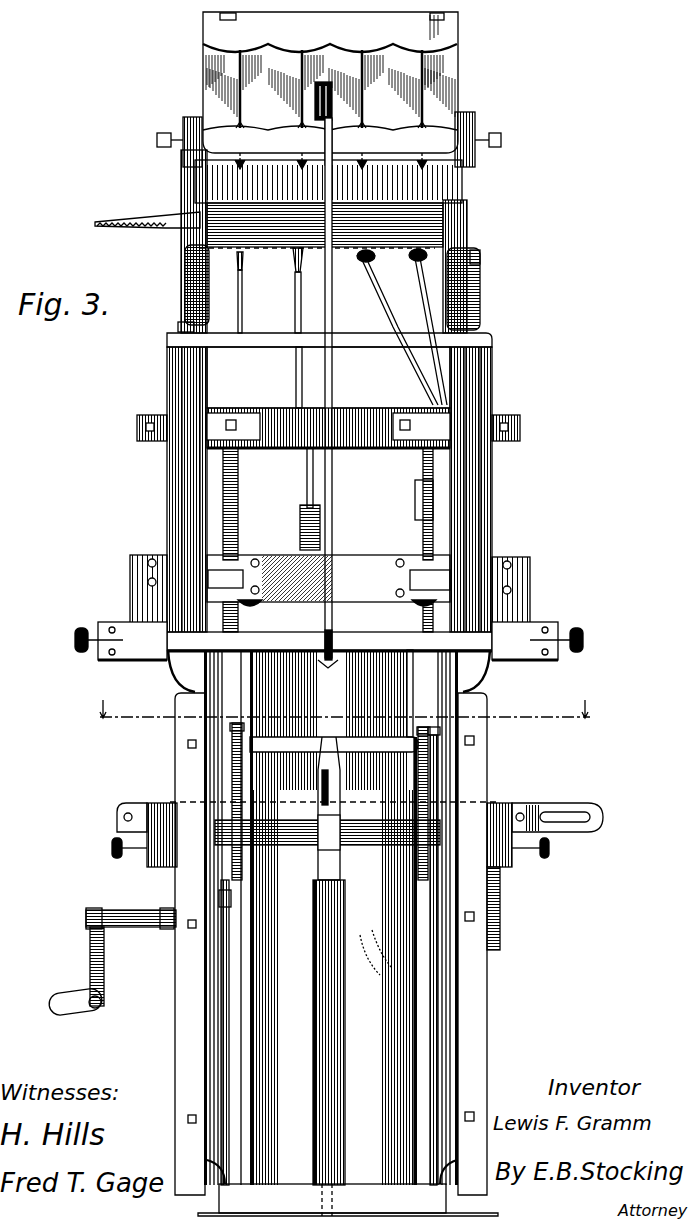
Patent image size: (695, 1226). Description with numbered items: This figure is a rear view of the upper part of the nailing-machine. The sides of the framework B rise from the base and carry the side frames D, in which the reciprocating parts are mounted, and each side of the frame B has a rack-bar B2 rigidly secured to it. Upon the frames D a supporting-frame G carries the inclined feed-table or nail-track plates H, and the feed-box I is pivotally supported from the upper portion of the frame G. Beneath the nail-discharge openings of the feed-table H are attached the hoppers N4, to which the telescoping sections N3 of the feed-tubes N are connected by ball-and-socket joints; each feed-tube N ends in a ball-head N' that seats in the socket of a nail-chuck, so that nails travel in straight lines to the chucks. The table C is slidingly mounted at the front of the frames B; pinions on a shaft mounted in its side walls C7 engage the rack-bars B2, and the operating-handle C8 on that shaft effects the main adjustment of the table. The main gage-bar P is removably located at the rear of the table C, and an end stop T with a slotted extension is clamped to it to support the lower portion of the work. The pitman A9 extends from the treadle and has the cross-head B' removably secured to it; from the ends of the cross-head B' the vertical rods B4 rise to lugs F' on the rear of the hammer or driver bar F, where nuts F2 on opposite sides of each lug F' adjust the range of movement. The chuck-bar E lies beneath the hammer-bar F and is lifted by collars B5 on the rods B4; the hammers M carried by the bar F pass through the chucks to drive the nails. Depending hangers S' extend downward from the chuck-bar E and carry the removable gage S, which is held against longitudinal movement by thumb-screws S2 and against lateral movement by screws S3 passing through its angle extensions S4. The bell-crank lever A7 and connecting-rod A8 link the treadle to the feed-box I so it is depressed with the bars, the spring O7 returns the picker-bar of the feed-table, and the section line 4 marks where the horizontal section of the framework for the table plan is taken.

The feed-box I is at (458, 80).
The inclined feed-table H is at (430, 236).
The spring O7 is at (147, 236).
The supporting-frame G is at (440, 290).
The hopper N4 is at (296, 268).
The telescoping section N3 is at (296, 292).
The feed-tube N is at (279, 377).
The ball-head N' is at (402, 327).
The connecting-rod A8 is at (328, 377).
The nuts F2 is at (232, 412).
The hammer or driver bar F is at (345, 455).
The lug F' is at (410, 461).
The vertical rods B4 is at (430, 503).
The hammer M is at (293, 499).
The side frames D is at (497, 511).
The chuck-bar E is at (380, 562).
The collars B5 is at (242, 607).
The hangers S' is at (519, 595).
The screws S3 is at (128, 635).
The gage S is at (556, 623).
The thumb-screws S2 is at (331, 631).
The angle extensions S4 is at (560, 660).
The bell-crank lever A7 is at (334, 656).
The side frames of the framework B is at (341, 922).
The rack-bar B2 is at (360, 1103).
The cross-head B' is at (327, 961).
The section line 4 is at (336, 713).
The main gage-bar P is at (500, 810).
The end stop T is at (569, 817).
The table C is at (508, 858).
The side walls C7 is at (492, 930).
The operating-handle C8 is at (112, 962).
The connecting-rod A9 is at (375, 985).